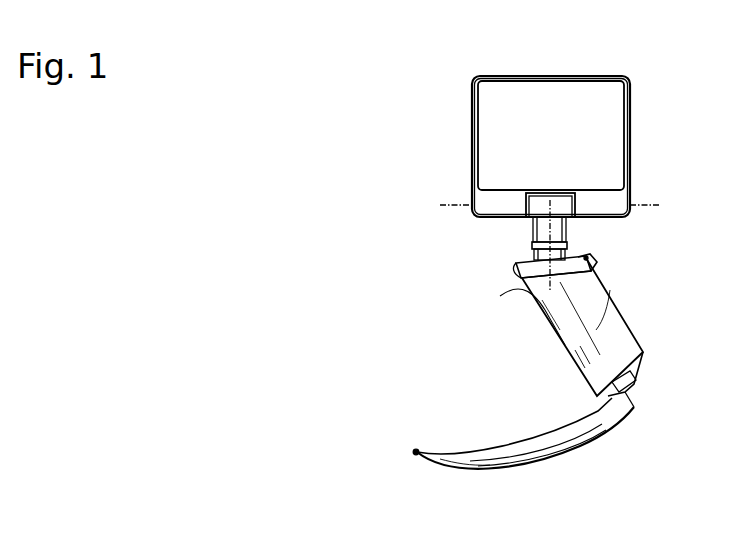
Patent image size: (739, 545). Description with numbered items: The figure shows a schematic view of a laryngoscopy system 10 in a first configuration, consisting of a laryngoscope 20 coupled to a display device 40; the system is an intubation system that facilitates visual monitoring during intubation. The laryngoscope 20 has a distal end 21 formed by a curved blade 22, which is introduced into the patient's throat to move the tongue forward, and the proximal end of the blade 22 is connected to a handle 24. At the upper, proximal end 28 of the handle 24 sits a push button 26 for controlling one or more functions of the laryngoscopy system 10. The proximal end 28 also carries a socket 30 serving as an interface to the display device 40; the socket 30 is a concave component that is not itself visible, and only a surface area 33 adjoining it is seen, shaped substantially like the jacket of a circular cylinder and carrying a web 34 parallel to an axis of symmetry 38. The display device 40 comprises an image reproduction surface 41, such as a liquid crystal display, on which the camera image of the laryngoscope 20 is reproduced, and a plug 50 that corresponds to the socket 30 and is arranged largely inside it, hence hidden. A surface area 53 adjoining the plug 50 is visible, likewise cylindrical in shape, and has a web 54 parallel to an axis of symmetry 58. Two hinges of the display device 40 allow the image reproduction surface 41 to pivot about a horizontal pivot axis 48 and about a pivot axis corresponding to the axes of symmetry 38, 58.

The laryngoscopy system 10 is at (312, 104).
The laryngoscope 20 is at (630, 403).
The distal end 21 is at (412, 452).
The curved blade 22 is at (473, 458).
The handle 24 is at (552, 326).
The push button 26 is at (584, 258).
The proximal end 28 is at (520, 265).
The socket 30 is at (566, 251).
The surface area adjoining the socket 33 is at (540, 257).
The web 34 is at (532, 251).
The axis of symmetry 38 is at (524, 281).
The display device 40 is at (473, 100).
The image reproduction surface 41 is at (620, 102).
The horizontal pivot axis 48 is at (459, 204).
The plug 50 is at (568, 249).
The surface area adjoining the plug 53 is at (568, 232).
The web 54 is at (531, 225).
The axis of symmetry 58 is at (550, 233).